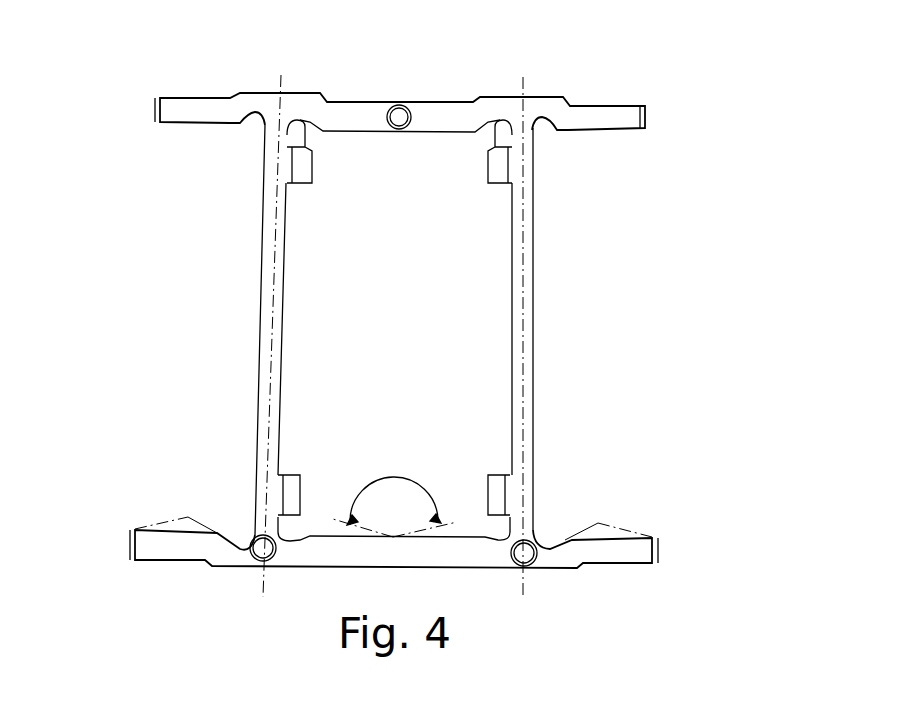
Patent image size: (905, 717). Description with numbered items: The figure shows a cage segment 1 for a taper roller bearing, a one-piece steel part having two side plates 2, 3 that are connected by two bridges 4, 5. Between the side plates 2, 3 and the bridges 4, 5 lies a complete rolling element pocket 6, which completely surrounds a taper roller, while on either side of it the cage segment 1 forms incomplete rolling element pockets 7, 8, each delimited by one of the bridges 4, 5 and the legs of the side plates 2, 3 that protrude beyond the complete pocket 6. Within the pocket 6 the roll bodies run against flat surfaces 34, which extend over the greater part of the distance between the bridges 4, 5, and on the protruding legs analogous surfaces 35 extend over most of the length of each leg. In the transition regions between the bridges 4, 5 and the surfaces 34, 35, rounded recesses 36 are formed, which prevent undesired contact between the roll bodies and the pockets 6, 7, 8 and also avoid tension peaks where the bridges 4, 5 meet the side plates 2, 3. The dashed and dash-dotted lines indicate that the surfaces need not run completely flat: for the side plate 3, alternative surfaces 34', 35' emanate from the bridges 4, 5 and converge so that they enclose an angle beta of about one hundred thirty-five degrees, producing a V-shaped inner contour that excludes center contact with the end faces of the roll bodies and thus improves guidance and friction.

The cage segment 1 is at (678, 80).
The side plate 2 is at (157, 110).
The side plate 3 is at (130, 548).
The bridge 4 is at (520, 246).
The bridge 5 is at (265, 263).
The pocket 6 is at (422, 361).
The incomplete rolling element pocket 7 is at (164, 357).
The incomplete rolling element pocket 8 is at (609, 359).
The flat surface 34 is at (393, 335).
The converging surface 34' is at (417, 486).
The surface 35 is at (392, 332).
The converging surface 35' is at (395, 486).
The rounded recess 36 is at (252, 133).